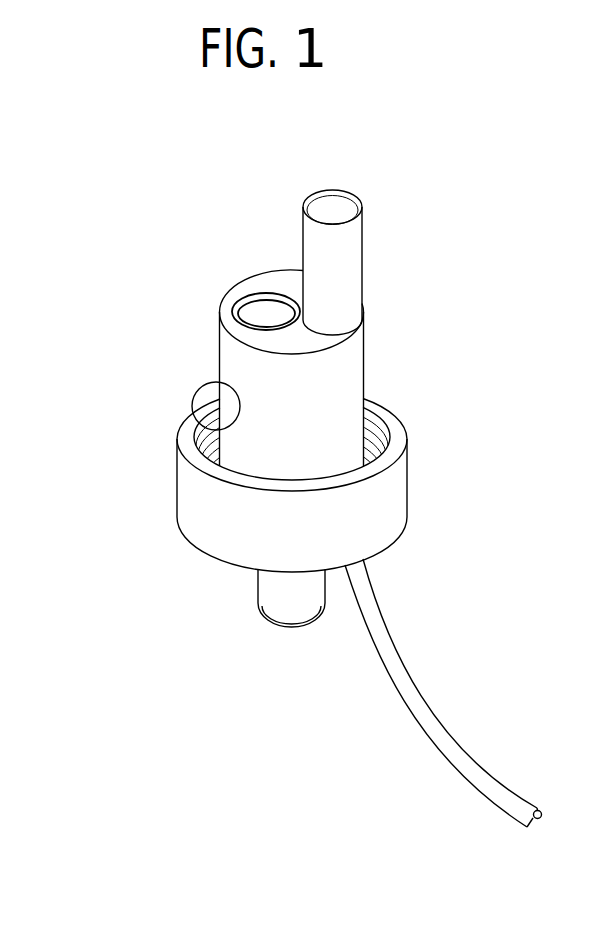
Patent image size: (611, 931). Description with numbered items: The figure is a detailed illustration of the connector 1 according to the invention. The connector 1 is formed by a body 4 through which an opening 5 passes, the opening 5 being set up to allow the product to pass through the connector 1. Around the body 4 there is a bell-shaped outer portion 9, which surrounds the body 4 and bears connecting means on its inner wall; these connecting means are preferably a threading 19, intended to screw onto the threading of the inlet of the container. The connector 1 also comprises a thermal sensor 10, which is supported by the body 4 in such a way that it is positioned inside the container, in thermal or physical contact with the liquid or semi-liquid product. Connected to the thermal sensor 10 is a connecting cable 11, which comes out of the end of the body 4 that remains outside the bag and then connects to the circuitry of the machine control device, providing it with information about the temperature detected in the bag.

The connector 1 is at (308, 508).
The body 4 is at (332, 378).
The opening 5 is at (262, 300).
The bell-shaped outer portion 9 is at (197, 482).
The thermal sensor 10 is at (342, 275).
The connecting cable 11 is at (403, 696).
The threading 19 is at (217, 377).